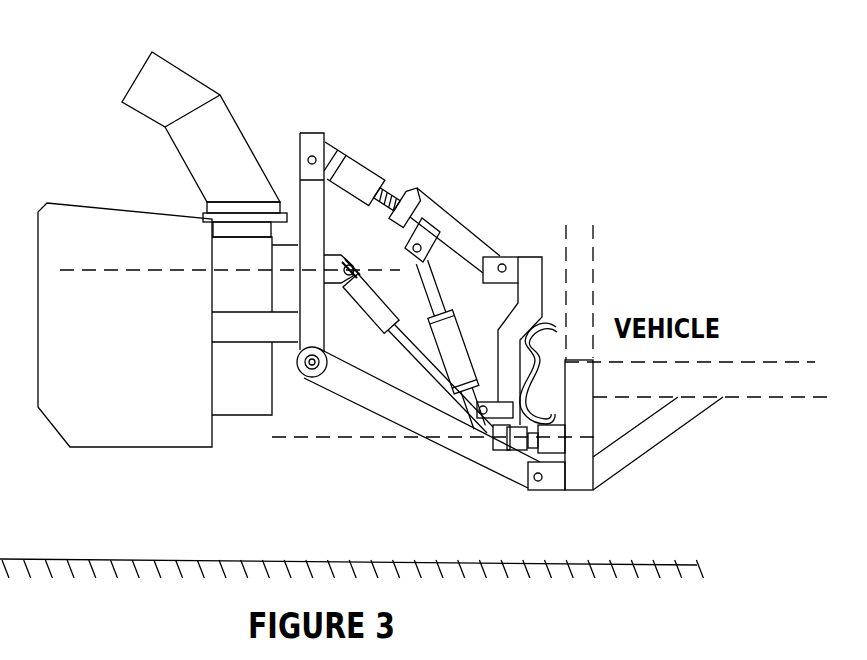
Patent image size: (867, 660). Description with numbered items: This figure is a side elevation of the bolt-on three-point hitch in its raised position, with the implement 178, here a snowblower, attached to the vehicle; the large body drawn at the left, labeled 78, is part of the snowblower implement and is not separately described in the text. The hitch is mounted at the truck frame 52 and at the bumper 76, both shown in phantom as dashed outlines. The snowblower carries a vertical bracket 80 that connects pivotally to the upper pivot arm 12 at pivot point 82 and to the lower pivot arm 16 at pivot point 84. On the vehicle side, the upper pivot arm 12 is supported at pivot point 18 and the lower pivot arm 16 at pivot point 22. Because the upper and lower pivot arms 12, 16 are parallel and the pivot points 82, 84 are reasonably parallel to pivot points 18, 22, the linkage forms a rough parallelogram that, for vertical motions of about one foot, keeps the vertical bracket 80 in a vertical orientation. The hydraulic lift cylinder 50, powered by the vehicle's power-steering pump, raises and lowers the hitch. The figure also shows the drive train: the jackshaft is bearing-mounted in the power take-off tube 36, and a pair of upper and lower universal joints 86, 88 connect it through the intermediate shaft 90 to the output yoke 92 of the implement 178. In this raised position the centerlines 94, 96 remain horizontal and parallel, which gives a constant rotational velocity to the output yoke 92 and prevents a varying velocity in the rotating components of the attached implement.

The implement 178 is at (182, 66).
The blower housing 78 is at (107, 341).
The centerline 94 is at (68, 267).
The vertical bracket 80 is at (307, 173).
The pivot point 82 is at (315, 155).
The upper pivot arm 12 is at (427, 207).
The pivot point 18 is at (505, 262).
The bumper 76 is at (548, 327).
The output yoke 92 is at (333, 253).
The upper universal joint 86 is at (363, 307).
The lower pivot arm 16 is at (340, 382).
The pivot point 84 is at (312, 380).
The intermediate shaft 90 is at (430, 372).
The centerline 96 is at (470, 440).
The lower universal joint 88 is at (518, 432).
The pivot point 22 is at (540, 482).
The hydraulic lift cylinder 50 is at (596, 499).
The power take-off tube 36 is at (557, 433).
The truck frame 52 is at (661, 393).